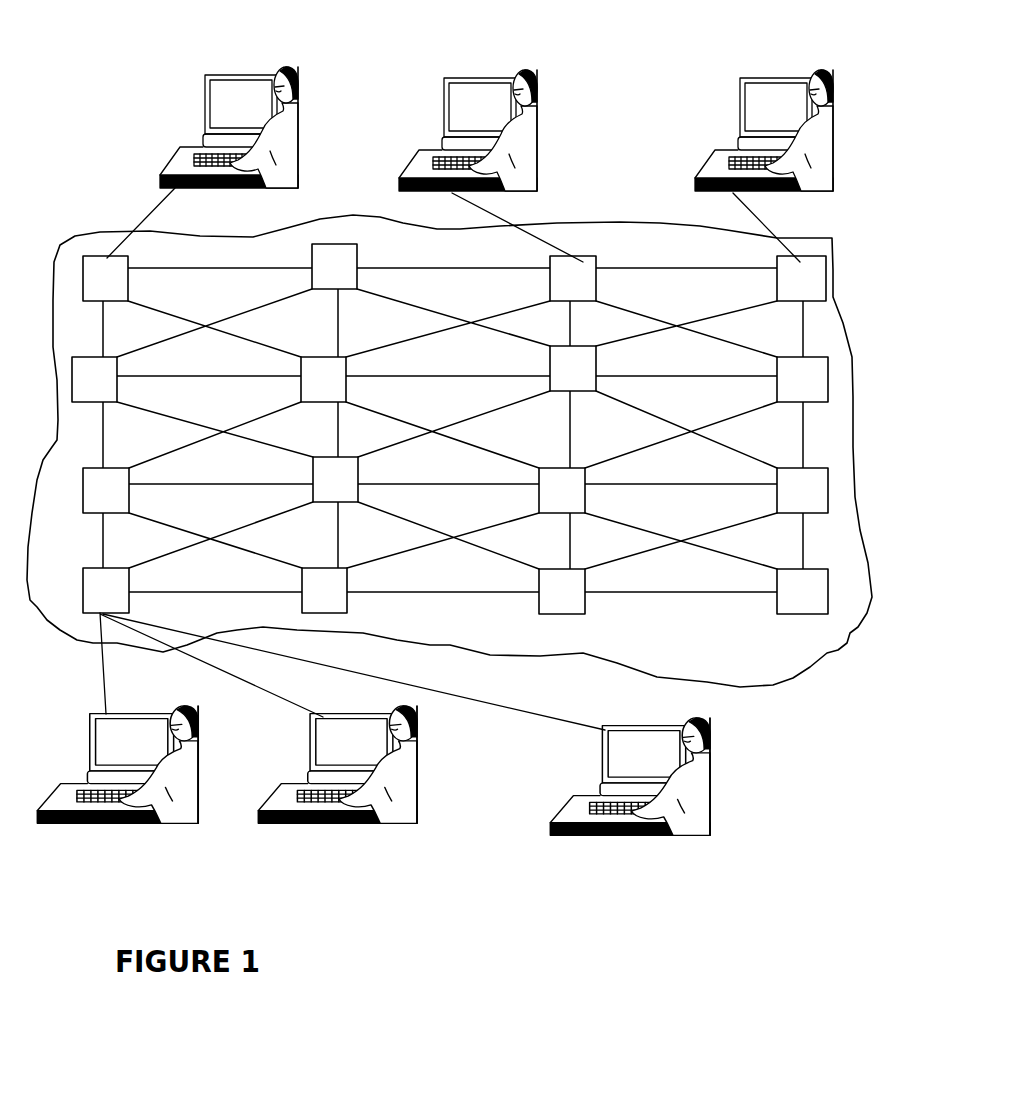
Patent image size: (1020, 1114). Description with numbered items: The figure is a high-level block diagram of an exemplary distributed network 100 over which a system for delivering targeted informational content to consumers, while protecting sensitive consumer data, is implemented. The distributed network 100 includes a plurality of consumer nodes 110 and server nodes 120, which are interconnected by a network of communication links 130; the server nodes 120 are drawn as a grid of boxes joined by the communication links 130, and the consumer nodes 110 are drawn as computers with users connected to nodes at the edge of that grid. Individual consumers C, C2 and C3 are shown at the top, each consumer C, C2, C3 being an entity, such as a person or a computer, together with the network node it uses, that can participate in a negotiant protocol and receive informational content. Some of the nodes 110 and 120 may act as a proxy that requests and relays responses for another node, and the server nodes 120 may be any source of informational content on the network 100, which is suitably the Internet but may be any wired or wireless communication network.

The distributed network 100 is at (477, 476).
The consumer nodes 110 is at (413, 825).
The server nodes 120 is at (335, 244).
The network of communication links 130 is at (557, 223).
The consumer C is at (280, 72).
The consumer C2 is at (527, 72).
The consumer C3 is at (822, 72).